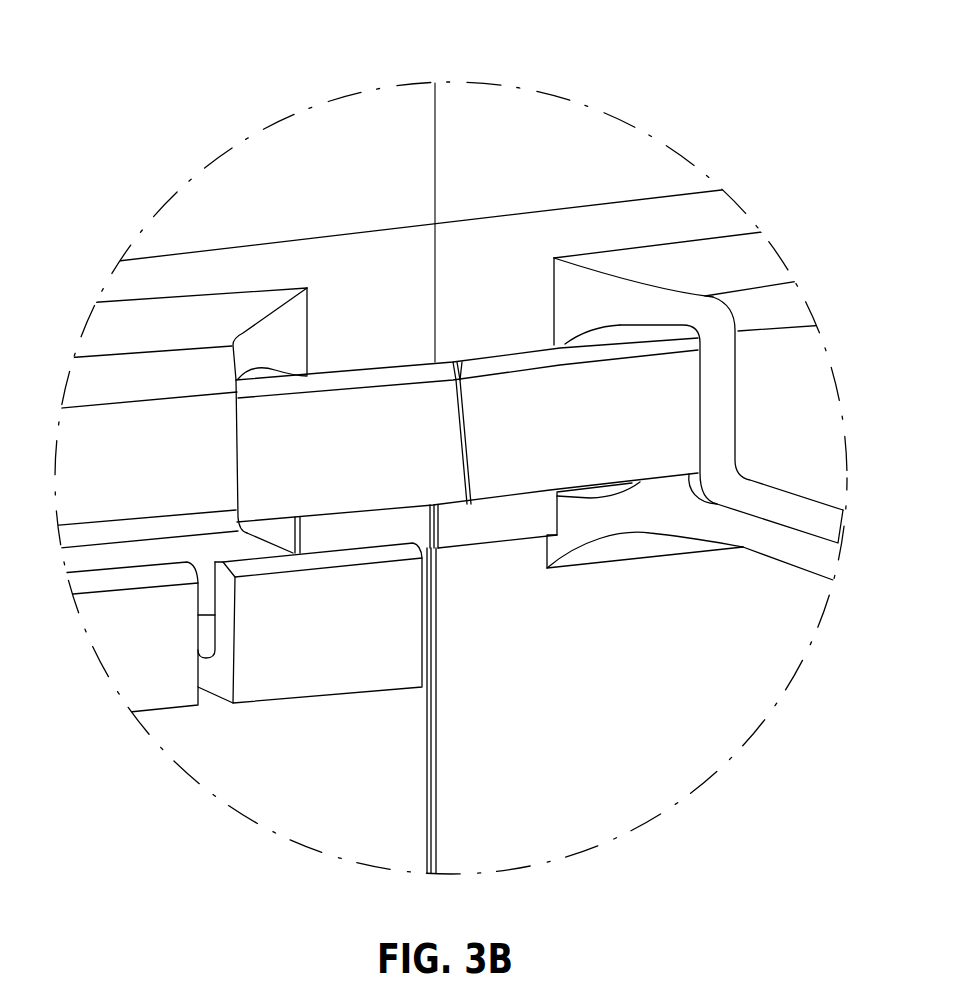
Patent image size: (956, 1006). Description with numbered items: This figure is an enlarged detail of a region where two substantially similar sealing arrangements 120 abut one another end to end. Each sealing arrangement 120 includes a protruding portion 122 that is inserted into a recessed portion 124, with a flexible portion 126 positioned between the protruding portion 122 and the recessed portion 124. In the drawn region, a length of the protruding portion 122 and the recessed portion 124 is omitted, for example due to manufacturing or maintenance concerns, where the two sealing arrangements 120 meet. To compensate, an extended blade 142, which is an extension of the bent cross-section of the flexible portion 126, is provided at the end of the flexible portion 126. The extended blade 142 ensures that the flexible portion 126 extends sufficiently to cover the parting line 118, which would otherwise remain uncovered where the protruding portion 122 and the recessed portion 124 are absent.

The parting line 118 is at (767, 518).
The sealing arrangement 120 is at (275, 345).
The protruding portion 122 is at (663, 497).
The recessed portion 124 is at (709, 326).
The flexible portion 126 is at (373, 373).
The extended blade 142 is at (402, 520).